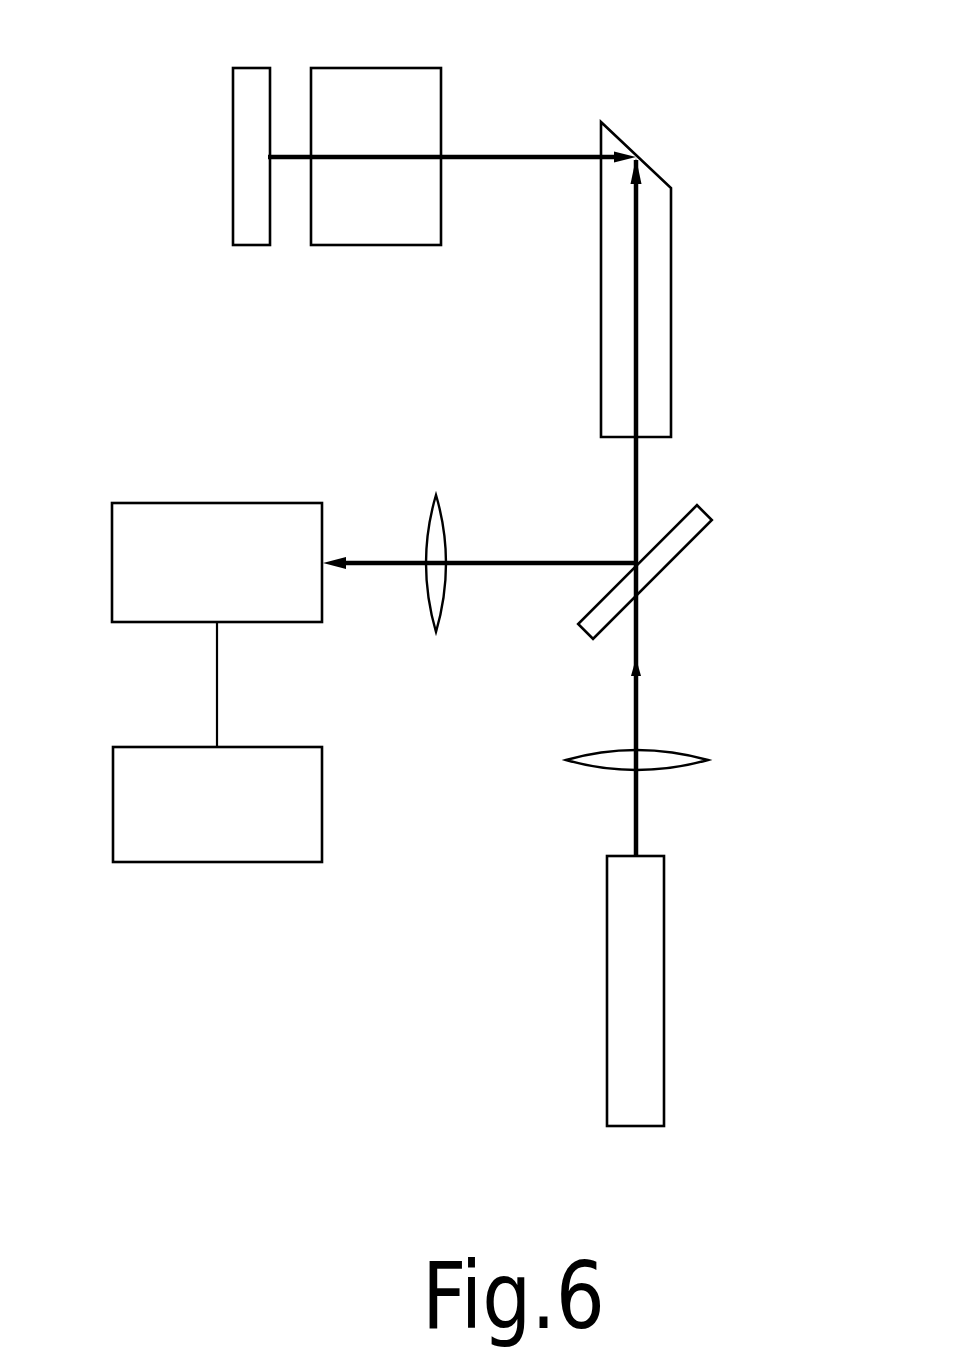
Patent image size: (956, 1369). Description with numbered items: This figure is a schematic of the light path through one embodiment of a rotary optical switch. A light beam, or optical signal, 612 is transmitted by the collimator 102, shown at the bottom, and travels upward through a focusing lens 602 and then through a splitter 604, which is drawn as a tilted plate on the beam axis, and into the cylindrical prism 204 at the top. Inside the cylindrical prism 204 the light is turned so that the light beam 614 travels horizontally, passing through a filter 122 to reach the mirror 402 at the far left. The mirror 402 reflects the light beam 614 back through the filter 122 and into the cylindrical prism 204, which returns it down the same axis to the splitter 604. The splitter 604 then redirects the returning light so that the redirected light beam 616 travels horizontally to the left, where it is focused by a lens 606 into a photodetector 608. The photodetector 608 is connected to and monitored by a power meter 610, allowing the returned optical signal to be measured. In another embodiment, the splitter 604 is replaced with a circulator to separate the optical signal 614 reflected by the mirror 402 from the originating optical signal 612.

The collimator 102 is at (665, 888).
The filter 122 is at (402, 67).
The cylindrical prism 204 is at (657, 170).
The mirror 402 is at (252, 67).
The focusing lens 602 is at (672, 747).
The splitter 604 is at (698, 507).
The lens 606 is at (435, 493).
The photodetector 608 is at (252, 503).
The power meter 610 is at (252, 746).
The light beam (optical signal) 612 is at (640, 623).
The light beam 614 is at (517, 155).
The redirected light beam 616 is at (517, 560).